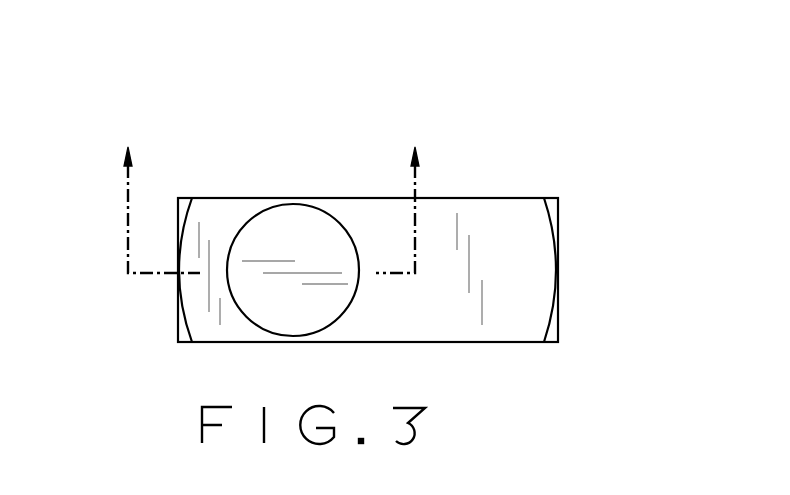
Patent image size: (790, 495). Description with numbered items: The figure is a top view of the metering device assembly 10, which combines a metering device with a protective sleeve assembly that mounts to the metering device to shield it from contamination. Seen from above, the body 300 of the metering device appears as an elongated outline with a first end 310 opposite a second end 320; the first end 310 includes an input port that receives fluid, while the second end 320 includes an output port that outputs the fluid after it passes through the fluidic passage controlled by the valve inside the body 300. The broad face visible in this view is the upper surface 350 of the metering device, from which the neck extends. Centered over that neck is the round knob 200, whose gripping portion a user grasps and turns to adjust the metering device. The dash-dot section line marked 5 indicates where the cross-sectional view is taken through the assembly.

The metering device assembly 10 is at (367, 227).
The knob 200 is at (273, 227).
The body 300 is at (517, 212).
The first end 310 is at (180, 312).
The second end 320 is at (558, 264).
The upper surface 350 is at (457, 328).
The section line 5- 5 is at (271, 193).